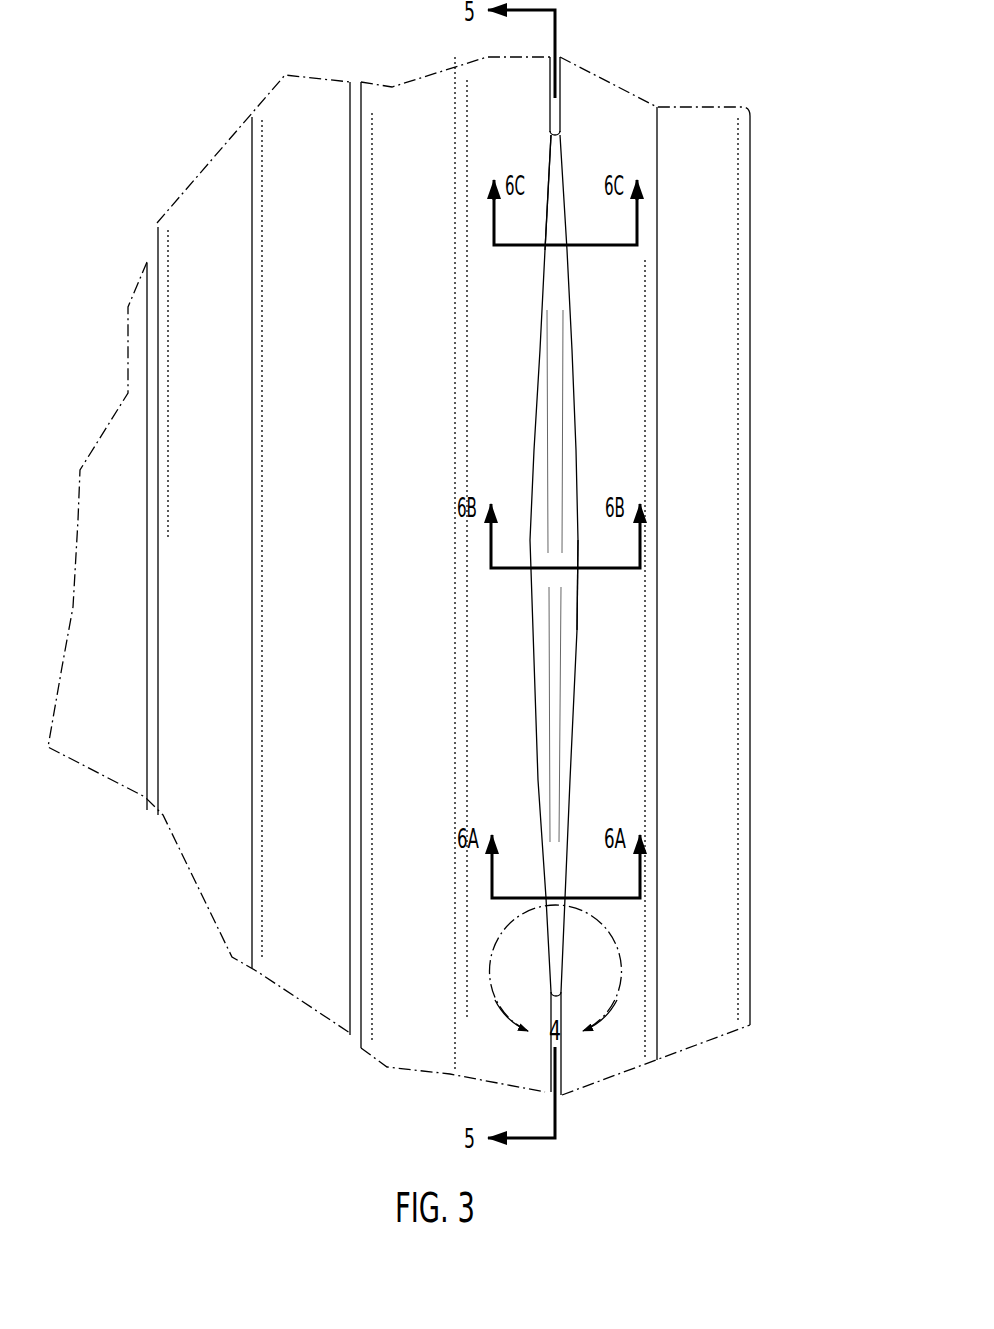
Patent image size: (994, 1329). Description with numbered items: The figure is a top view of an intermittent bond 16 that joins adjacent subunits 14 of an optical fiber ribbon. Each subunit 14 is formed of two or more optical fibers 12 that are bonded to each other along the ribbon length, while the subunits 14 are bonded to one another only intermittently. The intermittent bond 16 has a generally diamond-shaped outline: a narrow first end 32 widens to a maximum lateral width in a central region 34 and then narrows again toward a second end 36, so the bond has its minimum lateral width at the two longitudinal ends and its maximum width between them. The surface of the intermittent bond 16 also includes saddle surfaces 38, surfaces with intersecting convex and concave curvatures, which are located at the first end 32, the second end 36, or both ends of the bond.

The optical fiber 12 is at (385, 280).
The subunit 14 is at (388, 1083).
The intermittent bond 16 is at (555, 440).
The first end 32 is at (578, 978).
The central region 34 is at (588, 578).
The second end 36 is at (530, 127).
The saddle surface 38 is at (560, 122).